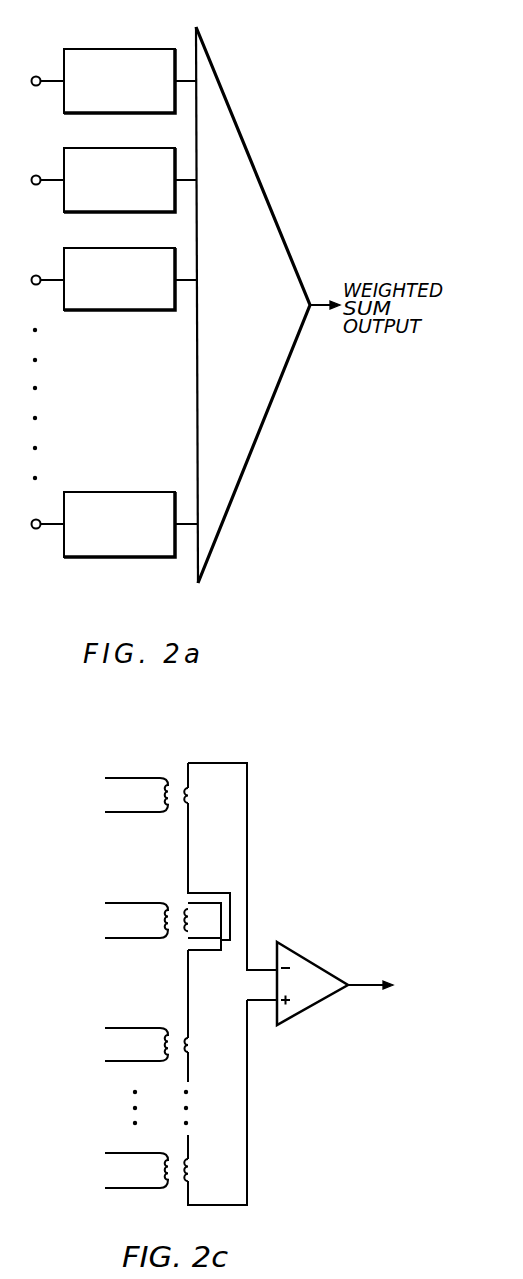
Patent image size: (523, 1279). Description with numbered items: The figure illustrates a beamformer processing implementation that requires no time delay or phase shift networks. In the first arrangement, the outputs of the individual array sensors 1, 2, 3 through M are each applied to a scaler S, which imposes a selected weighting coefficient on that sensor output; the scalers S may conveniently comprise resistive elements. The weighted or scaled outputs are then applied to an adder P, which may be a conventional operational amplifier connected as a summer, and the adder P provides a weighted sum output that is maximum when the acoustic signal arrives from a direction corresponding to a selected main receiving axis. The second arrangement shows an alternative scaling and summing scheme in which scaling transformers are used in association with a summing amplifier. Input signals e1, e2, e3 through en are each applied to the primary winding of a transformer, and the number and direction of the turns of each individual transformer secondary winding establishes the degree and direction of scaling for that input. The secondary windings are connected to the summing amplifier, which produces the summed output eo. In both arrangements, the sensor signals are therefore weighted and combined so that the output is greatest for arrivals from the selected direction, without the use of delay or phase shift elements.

In FIG. 2a, the scaler S is at (118, 48).
In FIG. 2a, the adder P is at (277, 212).
In FIG. 2a, the array sensor 1 is at (40, 82).
In FIG. 2a, the array sensor 2 is at (38, 181).
In FIG. 2a, the array sensor 3 is at (38, 281).
In FIG. 2a, the array sensor M is at (35, 525).
In FIG. 2c, the input transformer e1 is at (145, 795).
In FIG. 2c, the input transformer e2 is at (139, 920).
In FIG. 2c, the input transformer e3 is at (144, 1044).
In FIG. 2c, the input transformer en is at (144, 1170).
In FIG. 2c, the output amplifier eo is at (346, 983).